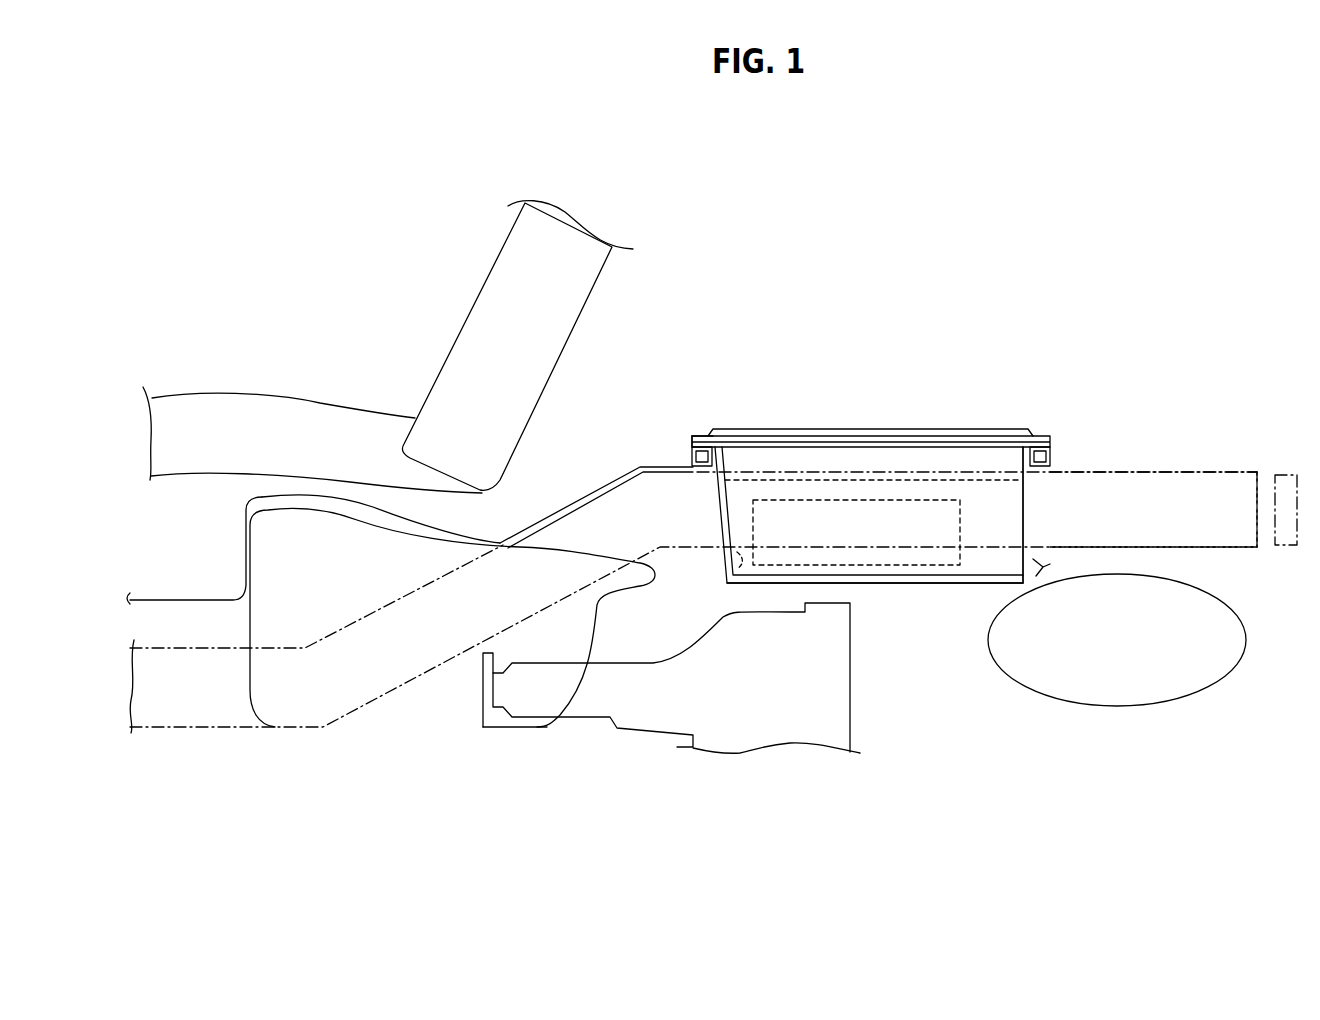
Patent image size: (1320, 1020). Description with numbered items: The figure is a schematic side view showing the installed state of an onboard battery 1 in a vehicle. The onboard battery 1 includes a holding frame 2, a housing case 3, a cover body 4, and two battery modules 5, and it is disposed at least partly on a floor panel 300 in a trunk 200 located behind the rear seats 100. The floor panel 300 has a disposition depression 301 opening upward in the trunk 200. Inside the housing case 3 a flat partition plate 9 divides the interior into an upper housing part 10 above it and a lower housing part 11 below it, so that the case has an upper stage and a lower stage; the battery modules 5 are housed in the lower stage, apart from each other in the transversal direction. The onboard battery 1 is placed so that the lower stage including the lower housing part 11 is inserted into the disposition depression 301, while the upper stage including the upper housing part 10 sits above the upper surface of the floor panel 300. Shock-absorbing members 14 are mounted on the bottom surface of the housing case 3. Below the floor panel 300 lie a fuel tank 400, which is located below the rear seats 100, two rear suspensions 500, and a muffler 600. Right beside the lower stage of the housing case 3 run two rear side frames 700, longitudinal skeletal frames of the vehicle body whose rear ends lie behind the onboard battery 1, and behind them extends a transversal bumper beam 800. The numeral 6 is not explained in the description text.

The onboard battery 1 is at (865, 482).
The holding frame 2 is at (683, 447).
The housing case 3 is at (1010, 521).
The cover body 4 is at (983, 428).
The battery module 5 is at (960, 553).
The fastening member 6 is at (690, 451).
The partition plate 9 is at (940, 470).
The upper housing part 10 is at (758, 455).
The lower housing part 11 is at (975, 553).
The shock-absorbing member 14 is at (720, 550).
The rear seats 100 is at (472, 327).
The trunk 200 is at (1137, 427).
The floor panel 300 is at (565, 505).
The disposition depression 301 is at (860, 583).
The fuel tank 400 is at (250, 688).
The rear suspension 500 is at (853, 688).
The muffler 600 is at (1025, 697).
The rear side frame 700 is at (1183, 472).
The bumper beam 800 is at (1280, 475).